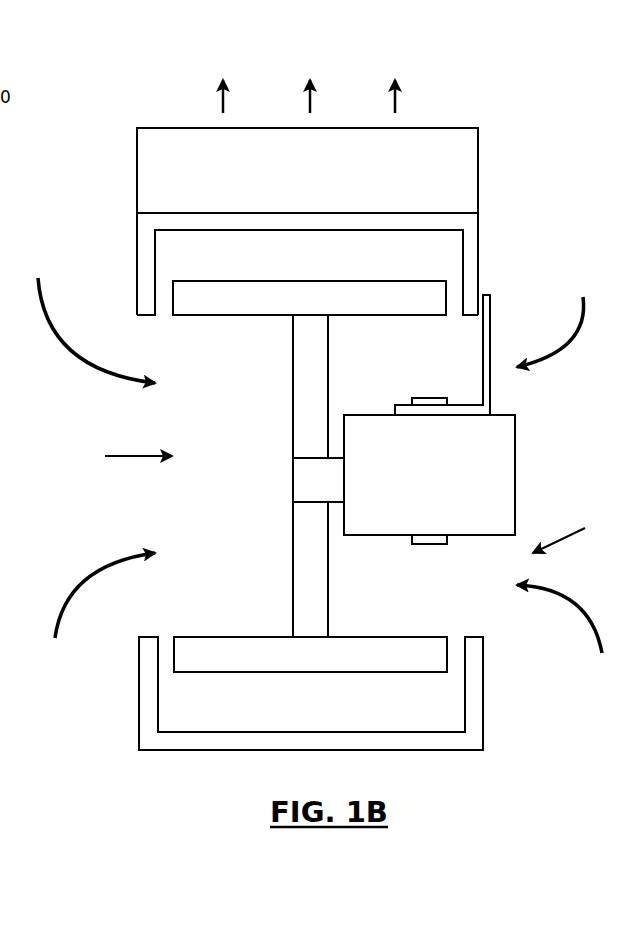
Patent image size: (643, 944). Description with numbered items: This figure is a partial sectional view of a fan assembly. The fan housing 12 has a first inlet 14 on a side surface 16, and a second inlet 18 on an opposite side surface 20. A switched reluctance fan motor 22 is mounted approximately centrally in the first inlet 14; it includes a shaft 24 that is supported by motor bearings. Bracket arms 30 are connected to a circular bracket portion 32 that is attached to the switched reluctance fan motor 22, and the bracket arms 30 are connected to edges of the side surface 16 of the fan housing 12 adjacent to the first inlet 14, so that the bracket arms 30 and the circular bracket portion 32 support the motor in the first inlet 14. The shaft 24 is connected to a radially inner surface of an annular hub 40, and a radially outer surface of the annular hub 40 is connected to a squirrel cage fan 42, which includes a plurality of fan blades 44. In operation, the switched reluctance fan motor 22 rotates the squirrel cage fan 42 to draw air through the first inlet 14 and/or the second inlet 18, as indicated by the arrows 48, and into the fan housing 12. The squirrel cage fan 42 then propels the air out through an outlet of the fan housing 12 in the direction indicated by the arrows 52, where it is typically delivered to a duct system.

The fan housing 12 is at (483, 690).
The first inlet 14 is at (573, 536).
The side surface 16 is at (478, 248).
The second inlet 18 is at (124, 456).
The opposite side surface 20 is at (137, 232).
The switched reluctance fan motor 22 is at (515, 472).
The shaft 24 is at (303, 472).
The bracket arms 30 is at (490, 312).
The circular bracket portion 32 is at (430, 397).
The annular hub 40 is at (292, 353).
The squirrel cage fan 42 is at (273, 280).
The fan blades 44 is at (207, 315).
The arrows 48 is at (75, 350).
The arrows 52 is at (223, 103).